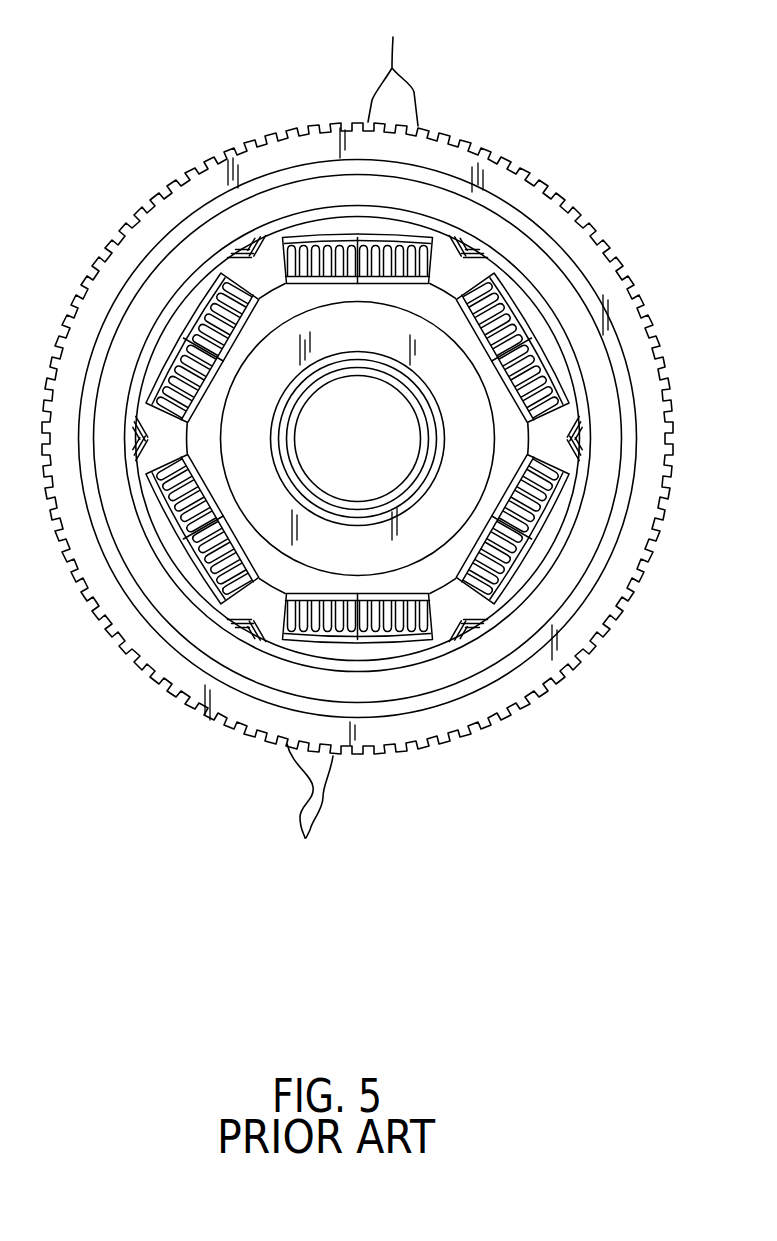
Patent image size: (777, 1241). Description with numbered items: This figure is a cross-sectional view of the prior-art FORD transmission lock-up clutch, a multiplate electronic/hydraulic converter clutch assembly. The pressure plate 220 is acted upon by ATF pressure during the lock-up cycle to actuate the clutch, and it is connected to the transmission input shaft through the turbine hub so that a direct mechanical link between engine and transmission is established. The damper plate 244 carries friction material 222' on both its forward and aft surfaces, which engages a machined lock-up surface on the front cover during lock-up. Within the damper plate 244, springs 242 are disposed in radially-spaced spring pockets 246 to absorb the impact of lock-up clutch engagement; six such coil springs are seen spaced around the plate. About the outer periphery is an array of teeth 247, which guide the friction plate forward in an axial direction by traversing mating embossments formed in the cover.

The pressure plate 220 is at (572, 242).
The friction material 222' is at (358, 507).
The springs 242 is at (202, 292).
The damper plate 244 is at (167, 633).
The spring pockets 246 is at (557, 522).
The teeth 247 is at (346, 439).